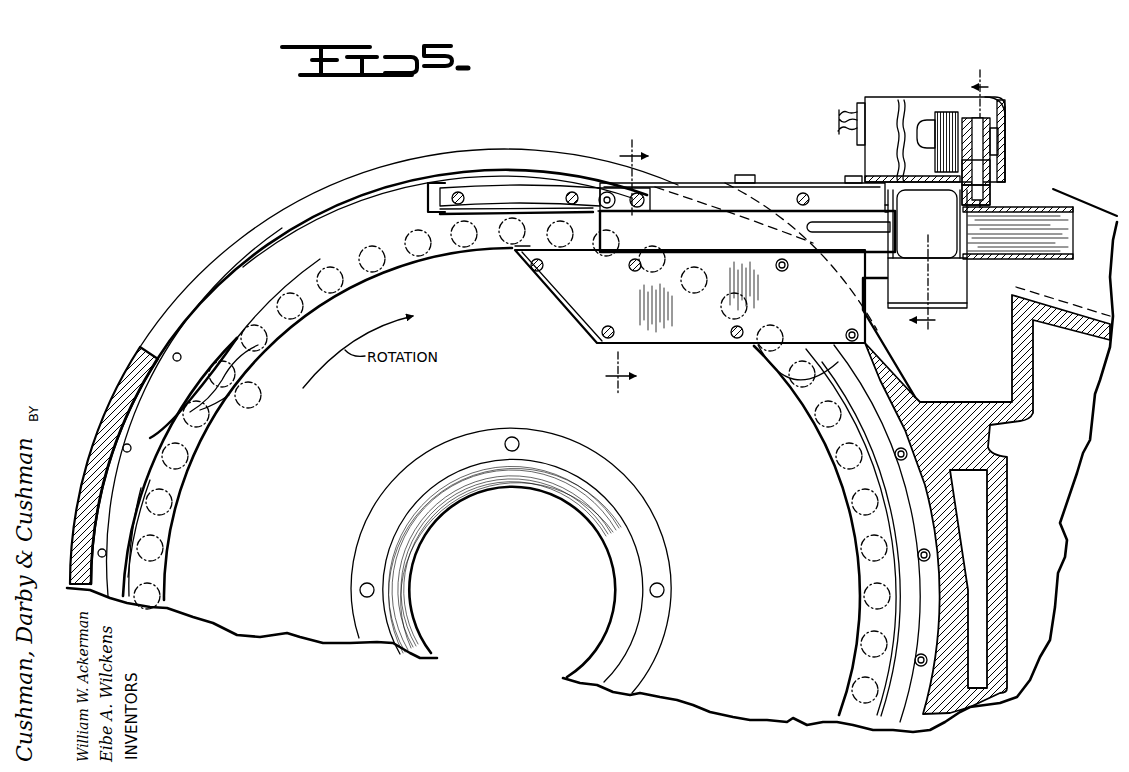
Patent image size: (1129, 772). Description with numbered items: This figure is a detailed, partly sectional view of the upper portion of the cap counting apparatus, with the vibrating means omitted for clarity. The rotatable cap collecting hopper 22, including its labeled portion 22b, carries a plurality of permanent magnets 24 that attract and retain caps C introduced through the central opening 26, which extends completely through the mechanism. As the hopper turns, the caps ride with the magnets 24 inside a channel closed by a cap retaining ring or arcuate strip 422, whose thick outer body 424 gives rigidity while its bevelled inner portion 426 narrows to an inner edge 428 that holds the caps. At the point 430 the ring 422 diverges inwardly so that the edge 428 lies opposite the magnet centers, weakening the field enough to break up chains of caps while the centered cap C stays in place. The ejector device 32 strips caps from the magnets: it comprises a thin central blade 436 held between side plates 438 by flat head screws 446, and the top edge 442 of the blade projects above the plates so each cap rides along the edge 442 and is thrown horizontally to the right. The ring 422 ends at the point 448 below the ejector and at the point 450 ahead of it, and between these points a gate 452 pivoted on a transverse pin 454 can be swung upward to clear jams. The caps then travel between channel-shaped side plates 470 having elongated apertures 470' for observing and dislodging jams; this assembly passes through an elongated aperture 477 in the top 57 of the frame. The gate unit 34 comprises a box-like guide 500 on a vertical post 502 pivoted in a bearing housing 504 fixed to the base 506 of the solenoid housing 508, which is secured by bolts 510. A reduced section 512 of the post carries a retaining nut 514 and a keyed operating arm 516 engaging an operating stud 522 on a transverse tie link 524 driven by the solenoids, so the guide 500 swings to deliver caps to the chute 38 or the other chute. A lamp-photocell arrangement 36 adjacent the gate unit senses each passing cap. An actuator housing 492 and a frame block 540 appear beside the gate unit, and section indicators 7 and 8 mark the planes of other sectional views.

The cap collecting hopper 22 is at (340, 210).
The hub plate 22b is at (770, 550).
The permanent magnets 24 is at (428, 250).
The central opening 26 is at (593, 530).
The ejector device 32 is at (586, 308).
The gate unit 34 is at (1013, 108).
The lamp-photocell arrangement 36 is at (969, 283).
The chute 38 is at (1110, 215).
The top of frame 57 is at (302, 200).
The cap retaining ring 422 is at (115, 447).
The outer body 424 is at (263, 256).
The inner portion 426 is at (158, 428).
The inner edge 428 is at (143, 470).
The point 430 is at (262, 363).
The blade 436 is at (540, 291).
The side plate 438 is at (563, 305).
The top edge 442 is at (515, 245).
The flat head screws 446 is at (632, 270).
The point 448 is at (812, 388).
The point 450 is at (437, 190).
The gate 452 is at (490, 190).
The transverse pin 454 is at (600, 190).
The side plate 470 is at (667, 217).
The elongated aperture 470' is at (772, 256).
The elongated aperture 477 is at (210, 272).
The actuator housing 492 is at (940, 241).
The box-like guide 500 is at (1005, 207).
The vertical post 502 is at (993, 160).
The bearing housing 504 is at (990, 176).
The base 506 is at (917, 122).
The solenoid housing 508 is at (975, 120).
The bolts 510 is at (747, 176).
The reduced section 512 is at (1000, 134).
The retaining nut 514 is at (1008, 104).
The operating arm 516 is at (980, 125).
The operating stud 522 is at (942, 112).
The tie link 524 is at (933, 128).
The frame block 540 is at (1012, 360).
The section line 7- 7 is at (956, 202).
The section line 8- 8 is at (634, 268).
The cap C is at (262, 399).